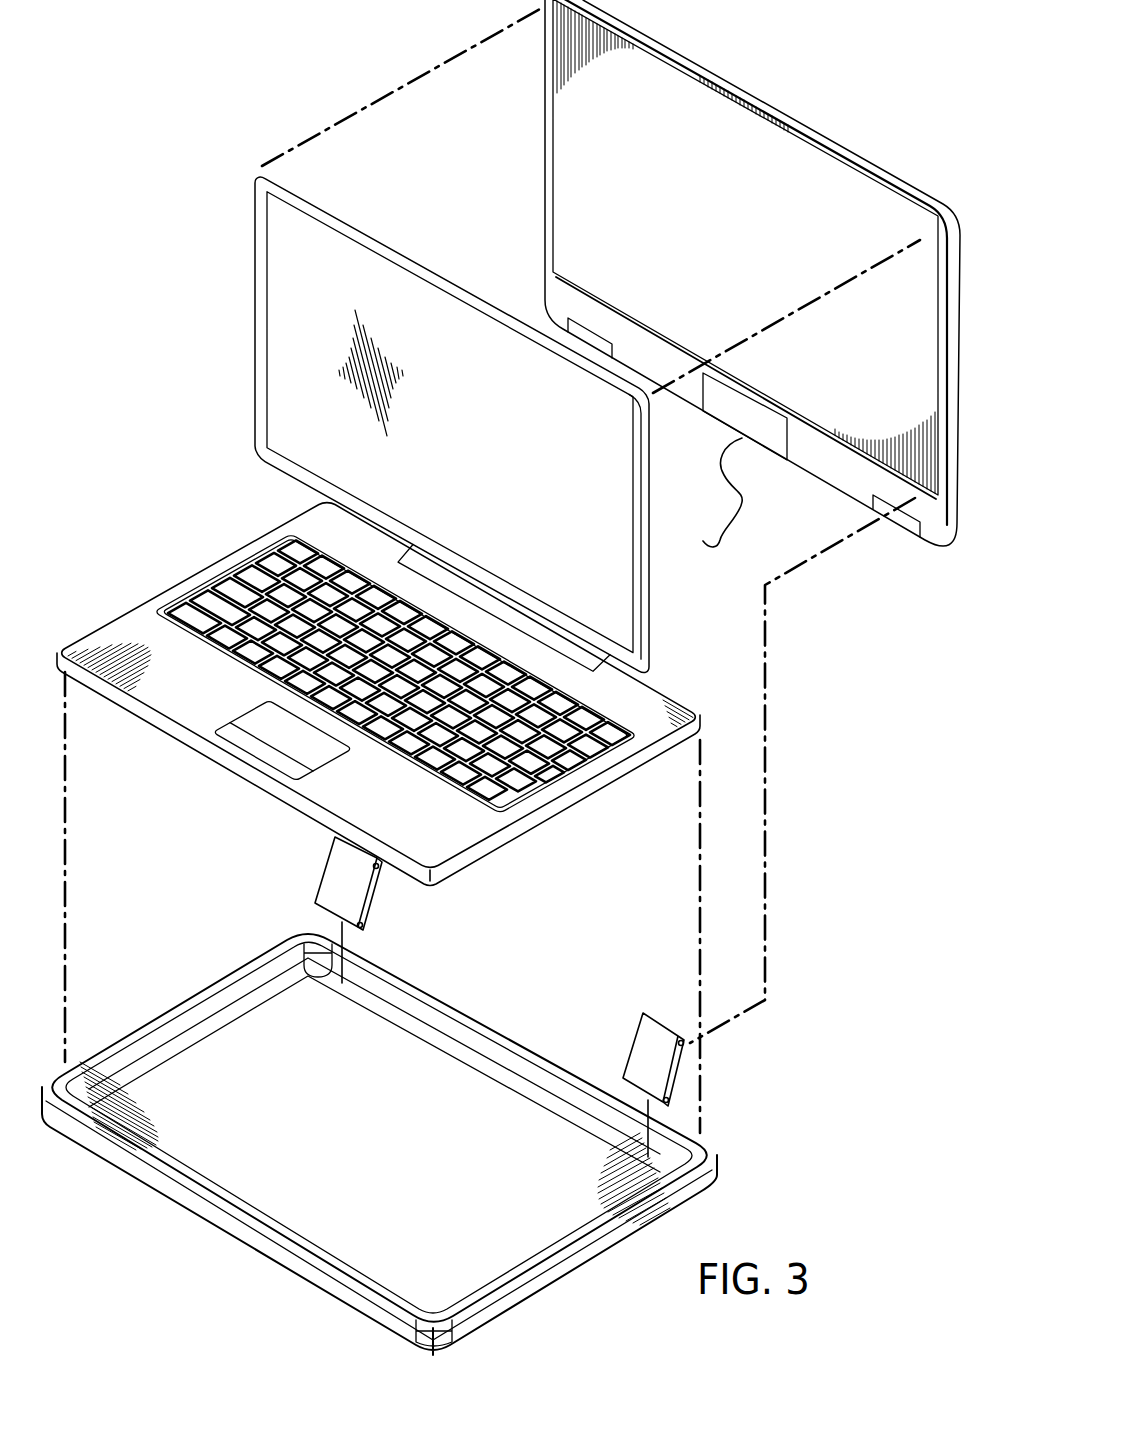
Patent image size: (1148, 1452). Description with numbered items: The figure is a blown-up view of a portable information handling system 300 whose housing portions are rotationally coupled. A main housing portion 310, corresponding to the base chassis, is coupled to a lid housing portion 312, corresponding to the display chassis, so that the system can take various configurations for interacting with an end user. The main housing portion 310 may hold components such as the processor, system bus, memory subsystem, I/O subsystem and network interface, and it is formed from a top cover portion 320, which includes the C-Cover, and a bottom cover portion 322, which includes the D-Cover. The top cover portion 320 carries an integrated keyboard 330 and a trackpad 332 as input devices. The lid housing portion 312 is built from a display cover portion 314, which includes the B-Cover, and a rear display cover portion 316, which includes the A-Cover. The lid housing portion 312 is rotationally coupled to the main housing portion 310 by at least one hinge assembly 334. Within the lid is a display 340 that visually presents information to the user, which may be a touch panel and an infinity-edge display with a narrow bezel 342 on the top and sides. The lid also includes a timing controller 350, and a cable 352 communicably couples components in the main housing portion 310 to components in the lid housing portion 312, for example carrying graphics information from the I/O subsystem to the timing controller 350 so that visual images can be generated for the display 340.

The portable information handling system 300 is at (178, 118).
The main housing portion 310 is at (102, 560).
The lid housing portion 312 is at (345, 72).
The display cover portion 314 is at (260, 383).
The rear display cover portion 316 is at (757, 97).
The top cover portion 320 is at (148, 722).
The bottom cover portion 322 is at (242, 1233).
The integrated keyboard 330 is at (210, 588).
The trackpad 332 is at (270, 737).
The hinge assembly 334 is at (325, 870).
The display 340 is at (499, 481).
The bezel 342 is at (255, 292).
The timing controller (TCON) 350 is at (766, 420).
The cable 352 is at (744, 502).